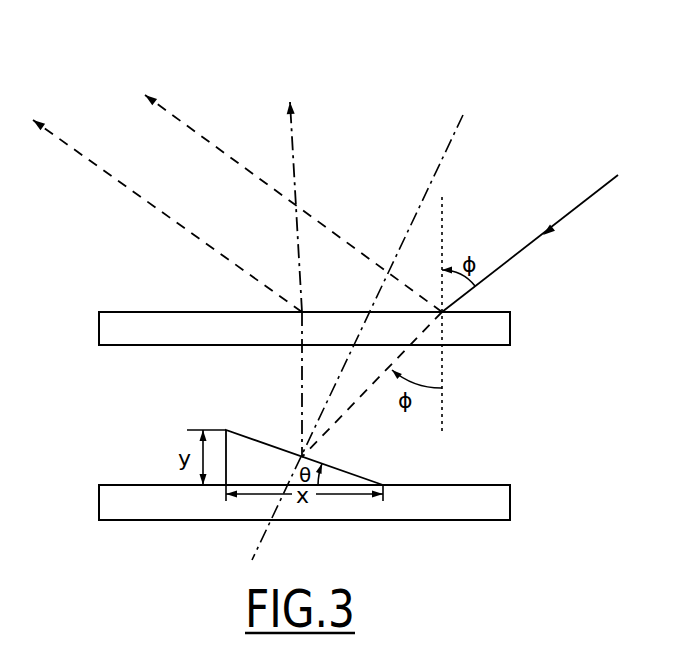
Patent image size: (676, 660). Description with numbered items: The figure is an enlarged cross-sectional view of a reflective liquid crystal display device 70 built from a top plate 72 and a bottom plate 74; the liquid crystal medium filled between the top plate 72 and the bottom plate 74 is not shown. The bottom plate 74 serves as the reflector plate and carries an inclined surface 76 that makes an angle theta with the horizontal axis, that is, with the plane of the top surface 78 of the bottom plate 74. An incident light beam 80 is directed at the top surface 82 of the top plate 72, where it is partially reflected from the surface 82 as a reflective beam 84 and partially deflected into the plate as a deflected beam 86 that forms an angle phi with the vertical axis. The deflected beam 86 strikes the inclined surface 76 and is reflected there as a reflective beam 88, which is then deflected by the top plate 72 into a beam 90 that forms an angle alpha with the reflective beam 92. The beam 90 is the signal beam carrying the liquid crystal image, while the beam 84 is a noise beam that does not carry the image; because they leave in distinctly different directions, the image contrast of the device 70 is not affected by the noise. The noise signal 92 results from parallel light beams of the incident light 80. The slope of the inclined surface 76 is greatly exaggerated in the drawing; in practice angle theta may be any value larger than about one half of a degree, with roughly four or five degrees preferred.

The liquid crystal display device 70 is at (400, 73).
The top plate 72 is at (510, 334).
The bottom plate 74 is at (507, 504).
The inclined surface 76 is at (360, 476).
The top surface of the bottom plate 78 is at (481, 485).
The incident light beam 80 is at (600, 186).
The top surface of the top plate 82 is at (499, 312).
The reflective beam 84 is at (185, 123).
The deflected beam 86 is at (341, 418).
The reflective beam 88 is at (302, 389).
The beam 90 is at (296, 164).
The reflective beam 92 is at (88, 160).